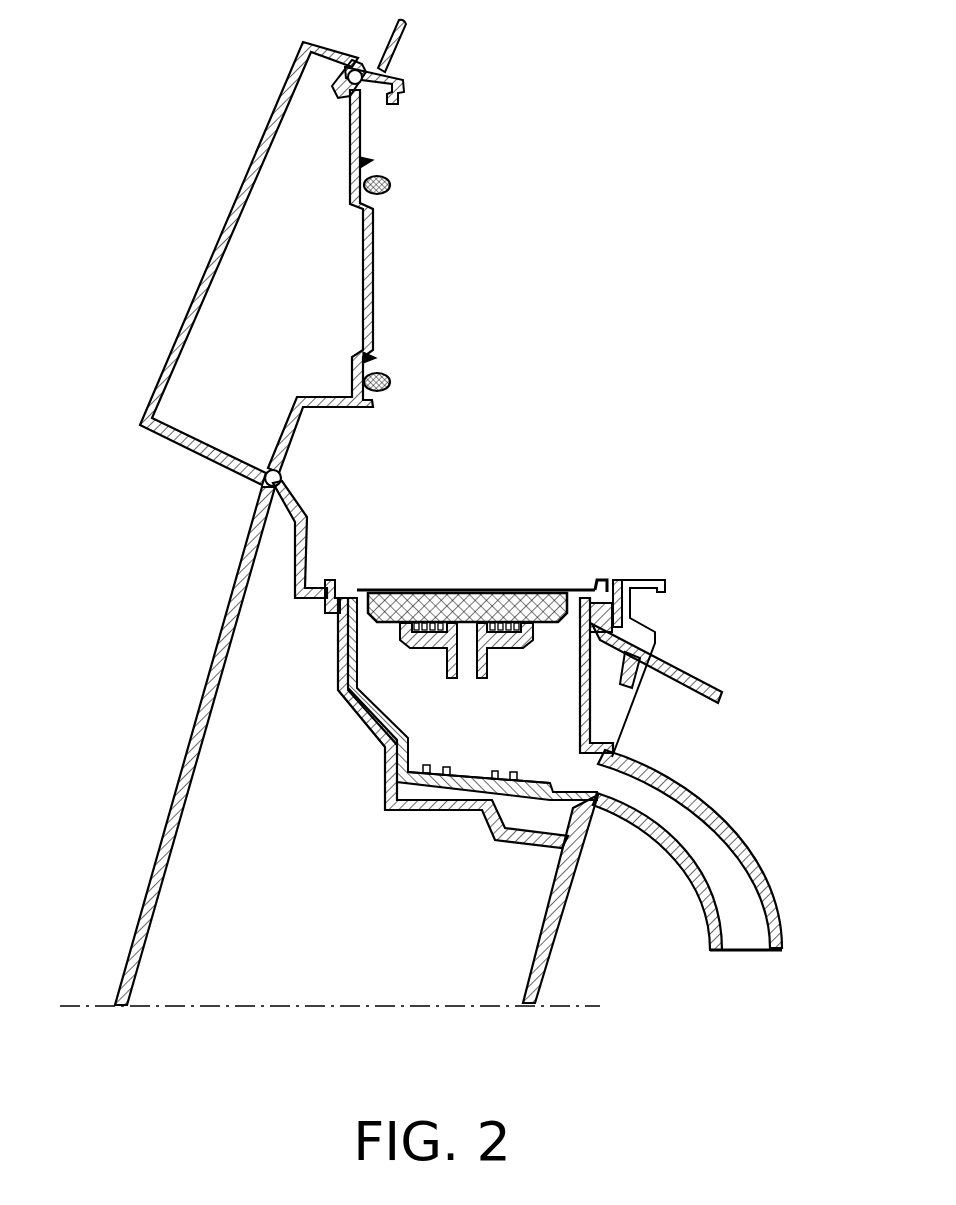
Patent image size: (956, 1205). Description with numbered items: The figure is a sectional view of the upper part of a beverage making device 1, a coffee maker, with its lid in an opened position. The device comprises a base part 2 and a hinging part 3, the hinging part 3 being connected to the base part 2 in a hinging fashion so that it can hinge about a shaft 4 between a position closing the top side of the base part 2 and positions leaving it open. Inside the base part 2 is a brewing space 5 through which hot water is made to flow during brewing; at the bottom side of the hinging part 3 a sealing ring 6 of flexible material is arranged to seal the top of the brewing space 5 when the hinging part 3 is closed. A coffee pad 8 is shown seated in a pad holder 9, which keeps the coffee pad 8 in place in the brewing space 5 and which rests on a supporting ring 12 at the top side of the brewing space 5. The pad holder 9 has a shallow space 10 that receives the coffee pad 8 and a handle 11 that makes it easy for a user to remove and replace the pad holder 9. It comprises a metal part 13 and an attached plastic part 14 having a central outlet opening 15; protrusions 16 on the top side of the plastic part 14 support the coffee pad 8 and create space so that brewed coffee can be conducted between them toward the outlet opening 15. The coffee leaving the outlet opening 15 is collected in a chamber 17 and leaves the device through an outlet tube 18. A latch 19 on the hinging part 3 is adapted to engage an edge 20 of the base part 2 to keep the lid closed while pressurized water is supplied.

The beverage making device 1 is at (156, 741).
The base part 2 is at (163, 838).
The hinging part 3 is at (240, 236).
The shaft 4 is at (264, 481).
The brewing space 5 is at (497, 586).
The sealing ring 6 is at (392, 185).
The coffee pad 8 is at (451, 596).
The pad holder 9 is at (500, 646).
The shallow space 10 is at (551, 606).
The handle 11 is at (723, 698).
The supporting ring 12 is at (328, 580).
The metal part 13 is at (357, 592).
The plastic part 14 is at (421, 645).
The outlet opening 15 is at (467, 665).
The protrusions 16 is at (538, 632).
The chamber 17 is at (420, 748).
The outlet tube 18 is at (745, 898).
The latch 19 is at (405, 96).
The edge 20 is at (668, 588).